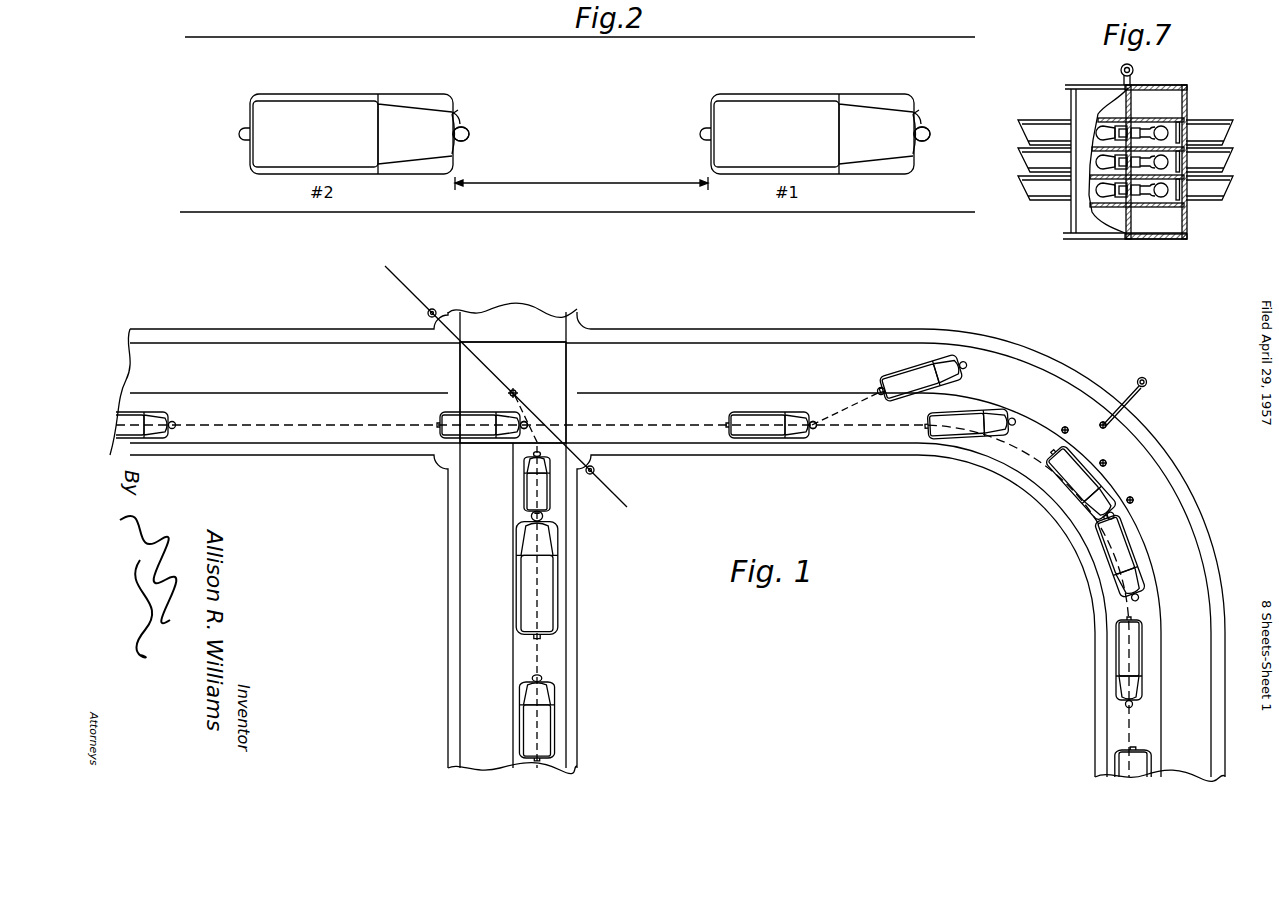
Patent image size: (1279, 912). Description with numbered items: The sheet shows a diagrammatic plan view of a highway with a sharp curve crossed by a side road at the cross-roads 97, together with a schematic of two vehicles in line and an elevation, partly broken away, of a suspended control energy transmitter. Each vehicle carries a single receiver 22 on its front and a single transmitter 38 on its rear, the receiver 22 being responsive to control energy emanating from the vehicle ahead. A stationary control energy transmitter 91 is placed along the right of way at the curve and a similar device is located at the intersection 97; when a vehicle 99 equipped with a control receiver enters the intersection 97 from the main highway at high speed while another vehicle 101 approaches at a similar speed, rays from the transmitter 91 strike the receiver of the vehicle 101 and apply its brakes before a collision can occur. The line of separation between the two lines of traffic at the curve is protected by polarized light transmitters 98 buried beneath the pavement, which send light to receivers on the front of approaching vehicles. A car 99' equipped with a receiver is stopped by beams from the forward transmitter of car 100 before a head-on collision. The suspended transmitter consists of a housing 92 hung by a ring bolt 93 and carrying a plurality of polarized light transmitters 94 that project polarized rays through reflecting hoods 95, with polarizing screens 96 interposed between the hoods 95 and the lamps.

In FIG. 2, the receiver 22 is at (466, 126).
In FIG. 1, the receiver 22 is at (538, 446).
In FIG. 2, the transmitter 38 is at (362, 100).
In FIG. 1, the transmitter 38 is at (525, 483).
In FIG. 1, the stationary control energy transmitter 91 is at (518, 393).
In FIG. 7, the housing 92 is at (1188, 90).
In FIG. 7, the ring bolt 93 is at (1121, 70).
In FIG. 7, the polarized light transmitter 94 is at (1160, 128).
In FIG. 7, the reflecting hood 95 is at (1220, 128).
In FIG. 7, the polarizing screen 96 is at (1178, 124).
In FIG. 1, the cross-roads 97 is at (513, 392).
In FIG. 1, the polarized light transmitter 98 is at (1066, 428).
In FIG. 1, the vehicle 99 is at (482, 411).
In FIG. 1, the car 99' is at (936, 377).
In FIG. 1, the car 100 is at (742, 432).
In FIG. 1, the vehicle 101 is at (532, 494).